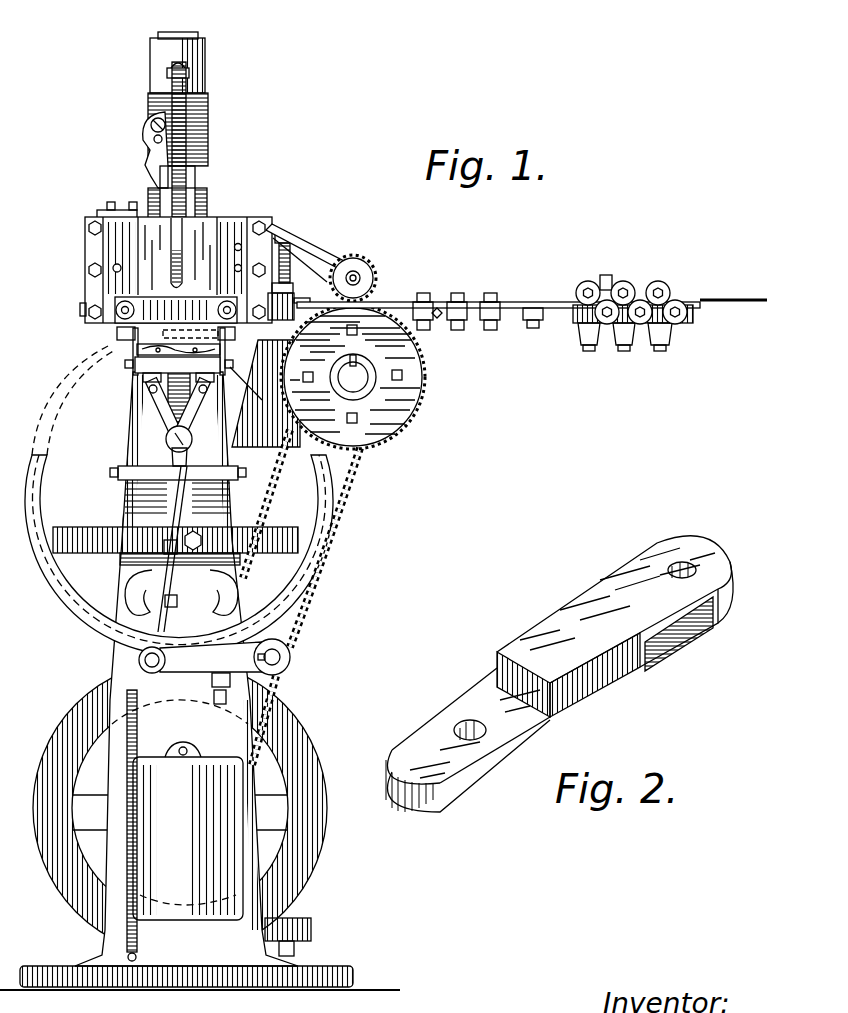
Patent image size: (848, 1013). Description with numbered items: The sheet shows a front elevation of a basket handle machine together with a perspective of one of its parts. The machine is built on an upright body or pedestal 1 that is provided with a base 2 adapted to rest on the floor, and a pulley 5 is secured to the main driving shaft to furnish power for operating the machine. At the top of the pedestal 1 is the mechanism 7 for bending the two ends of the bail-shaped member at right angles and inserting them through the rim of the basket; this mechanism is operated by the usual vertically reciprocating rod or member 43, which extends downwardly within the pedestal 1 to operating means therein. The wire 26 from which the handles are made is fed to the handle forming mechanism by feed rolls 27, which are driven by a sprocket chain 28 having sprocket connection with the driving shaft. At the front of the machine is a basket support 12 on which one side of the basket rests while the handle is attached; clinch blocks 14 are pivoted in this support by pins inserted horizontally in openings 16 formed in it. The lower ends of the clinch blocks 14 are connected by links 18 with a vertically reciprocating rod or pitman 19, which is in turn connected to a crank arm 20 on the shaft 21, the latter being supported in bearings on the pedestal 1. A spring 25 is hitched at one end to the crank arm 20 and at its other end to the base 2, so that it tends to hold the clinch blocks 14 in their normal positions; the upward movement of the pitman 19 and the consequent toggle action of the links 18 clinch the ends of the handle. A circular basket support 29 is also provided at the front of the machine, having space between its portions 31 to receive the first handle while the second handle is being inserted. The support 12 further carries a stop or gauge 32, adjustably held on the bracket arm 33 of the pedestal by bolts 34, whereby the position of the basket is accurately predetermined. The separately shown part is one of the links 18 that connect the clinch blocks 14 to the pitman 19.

In FIG. 1, the upright body or pedestal 1 is at (220, 740).
In FIG. 1, the base 2 is at (320, 973).
In FIG. 1, the pulley 5 is at (315, 856).
In FIG. 1, the mechanism for bending and inserting handle ends 7 is at (190, 265).
In FIG. 1, the basket support 12 is at (272, 238).
In FIG. 1, the clinch blocks 14 is at (166, 364).
In FIG. 1, the openings 16 is at (150, 347).
In FIG. 1, the links 18 is at (187, 418).
In FIG. 2, the links 18 is at (613, 683).
In FIG. 1, the vertically reciprocating rod or pitman 19 is at (167, 492).
In FIG. 1, the crank arm 20 is at (262, 667).
In FIG. 1, the shaft 21 is at (280, 655).
In FIG. 1, the spring 25 is at (133, 740).
In FIG. 1, the wire 26 is at (742, 293).
In FIG. 1, the feed rolls 27 is at (372, 335).
In FIG. 1, the sprocket chain 28 is at (316, 592).
In FIG. 1, the circular basket support 29 is at (330, 488).
In FIG. 1, the portions of the circular basket support 31 is at (217, 592).
In FIG. 1, the stop or gauge 32 is at (125, 333).
In FIG. 1, the bracket arm 33 is at (150, 370).
In FIG. 1, the bolts 34 is at (130, 366).
In FIG. 1, the vertically reciprocating rod or member 43 is at (187, 38).